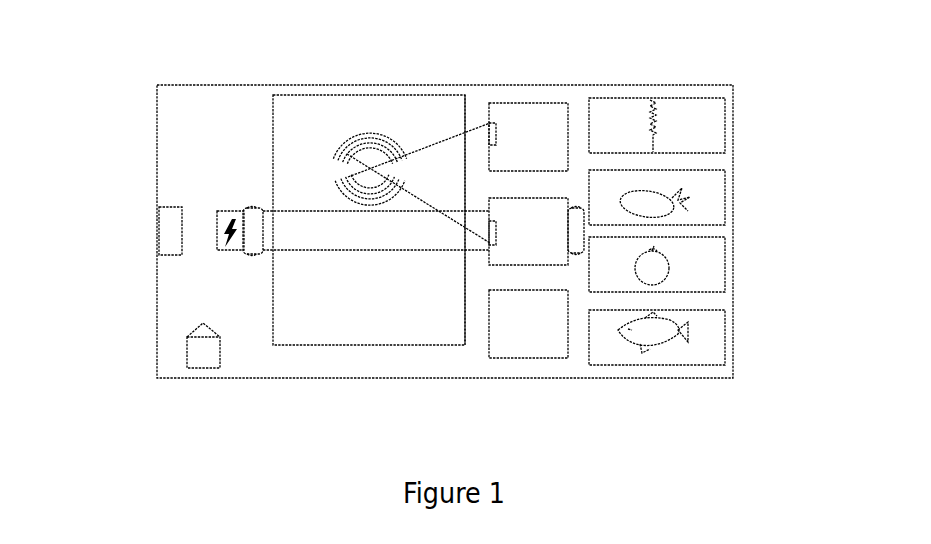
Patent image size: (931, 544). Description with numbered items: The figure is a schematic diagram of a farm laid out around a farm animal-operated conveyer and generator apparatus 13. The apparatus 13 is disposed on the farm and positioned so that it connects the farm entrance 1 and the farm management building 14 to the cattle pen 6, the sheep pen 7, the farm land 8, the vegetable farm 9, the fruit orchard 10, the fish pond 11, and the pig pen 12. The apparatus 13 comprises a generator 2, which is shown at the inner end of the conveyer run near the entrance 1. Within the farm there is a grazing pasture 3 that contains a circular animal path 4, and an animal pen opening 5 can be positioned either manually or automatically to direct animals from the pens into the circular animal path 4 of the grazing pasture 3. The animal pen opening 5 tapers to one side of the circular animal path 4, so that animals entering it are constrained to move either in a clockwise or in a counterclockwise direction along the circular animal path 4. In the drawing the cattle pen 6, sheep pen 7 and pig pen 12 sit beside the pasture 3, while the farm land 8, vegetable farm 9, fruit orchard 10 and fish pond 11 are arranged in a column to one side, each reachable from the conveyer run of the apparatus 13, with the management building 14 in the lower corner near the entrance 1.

The farm entrance 1 is at (112, 136).
The generator 2 is at (197, 136).
The grazing pasture 3 is at (345, 181).
The circular animal path 4 is at (395, 130).
The animal pen opening 5 is at (484, 181).
The cattle pen 6 is at (564, 94).
The sheep pen 7 is at (608, 141).
The farm land 8 is at (722, 85).
The vegetable farm 9 is at (722, 169).
The fruit orchard 10 is at (722, 264).
The fish pond 11 is at (722, 371).
The pig pen 12 is at (608, 354).
The farm animal-operated conveyer and generator apparatus 13 is at (404, 315).
The farm management building 14 is at (131, 371).